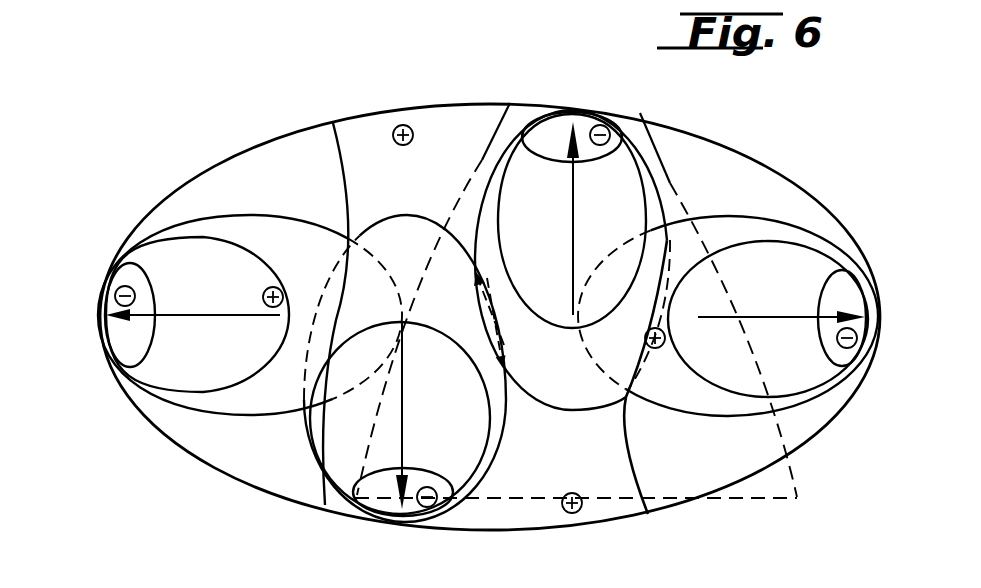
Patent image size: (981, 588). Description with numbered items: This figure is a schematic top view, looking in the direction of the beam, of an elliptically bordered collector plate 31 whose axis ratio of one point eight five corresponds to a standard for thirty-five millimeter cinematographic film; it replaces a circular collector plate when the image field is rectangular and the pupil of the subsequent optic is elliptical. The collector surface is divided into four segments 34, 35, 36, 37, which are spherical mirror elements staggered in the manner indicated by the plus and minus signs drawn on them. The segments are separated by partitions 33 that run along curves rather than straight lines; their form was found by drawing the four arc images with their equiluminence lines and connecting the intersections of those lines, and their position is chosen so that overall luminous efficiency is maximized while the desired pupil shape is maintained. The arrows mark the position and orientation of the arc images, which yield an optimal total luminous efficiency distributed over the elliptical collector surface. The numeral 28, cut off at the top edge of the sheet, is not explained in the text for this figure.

The lead 28 is at (455, 0).
The elliptically bordered collector plate 31 is at (690, 119).
The partitions 33 is at (352, 189).
The segment 34 is at (227, 450).
The segment 35 is at (378, 140).
The segment 36 is at (520, 511).
The segment 37 is at (803, 425).